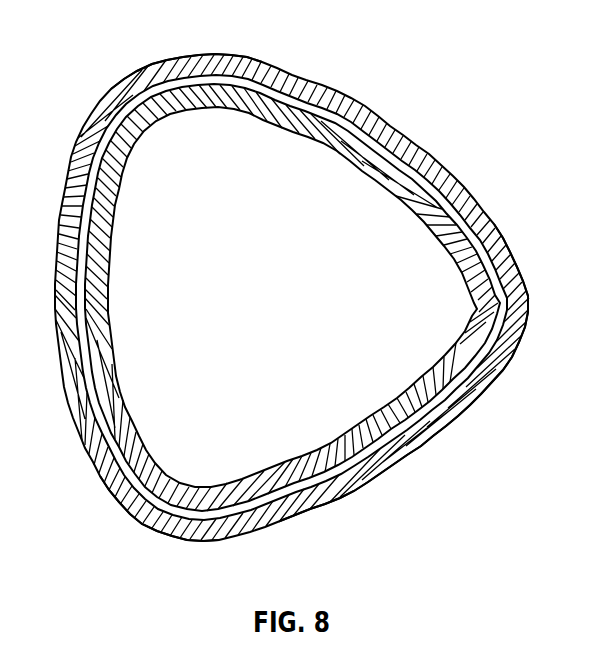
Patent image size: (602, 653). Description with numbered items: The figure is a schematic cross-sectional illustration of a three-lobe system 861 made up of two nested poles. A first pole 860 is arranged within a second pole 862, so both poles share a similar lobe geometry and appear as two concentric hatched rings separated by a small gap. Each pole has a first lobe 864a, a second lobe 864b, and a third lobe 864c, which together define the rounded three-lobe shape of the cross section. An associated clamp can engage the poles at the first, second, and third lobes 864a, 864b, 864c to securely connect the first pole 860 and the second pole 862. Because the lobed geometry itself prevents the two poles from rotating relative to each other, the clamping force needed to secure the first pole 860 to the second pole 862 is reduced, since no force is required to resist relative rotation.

The first pole 860 is at (97, 299).
The three-lobe system 861 is at (100, 66).
The second pole 862 is at (367, 477).
The first lobe 864a is at (204, 54).
The second lobe 864b is at (118, 514).
The third lobe 864c is at (532, 297).